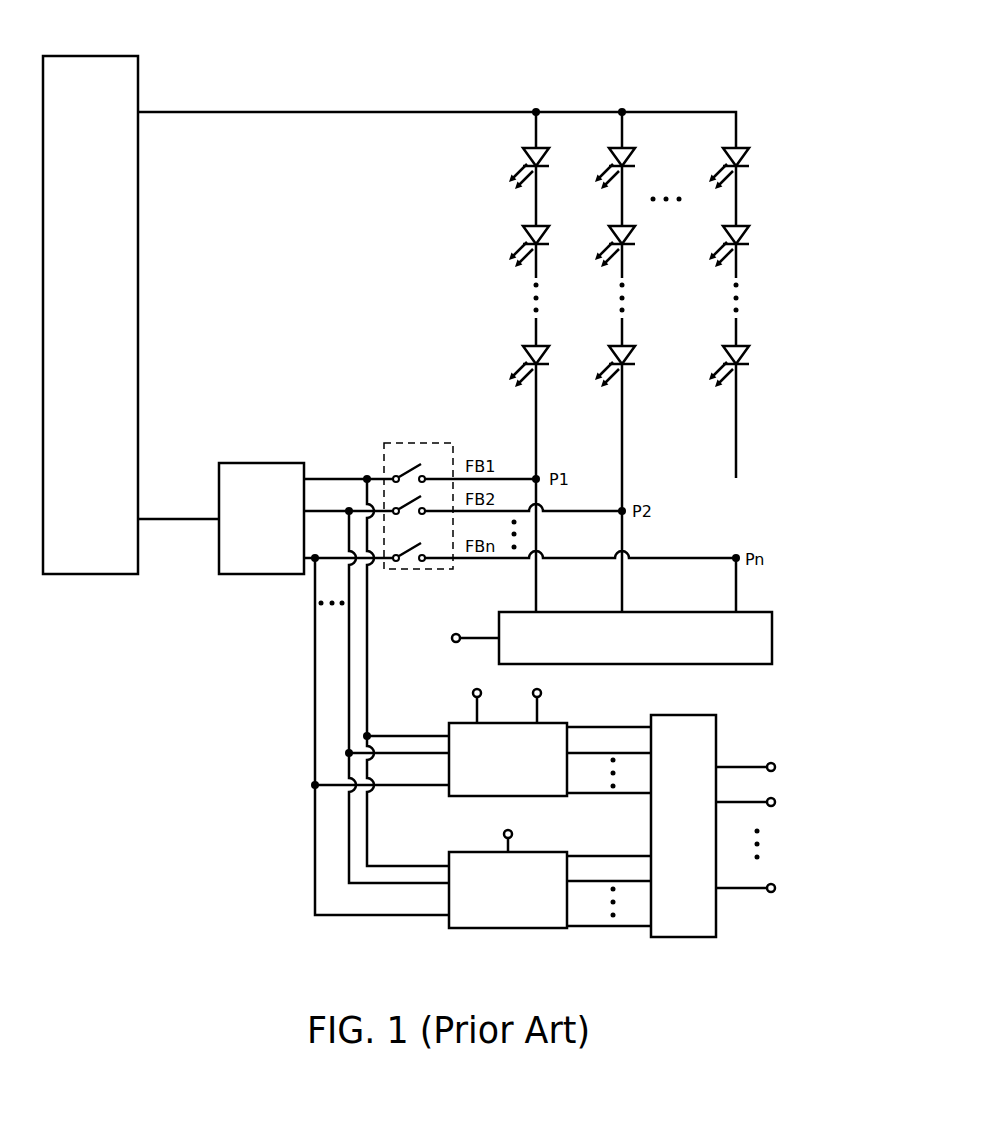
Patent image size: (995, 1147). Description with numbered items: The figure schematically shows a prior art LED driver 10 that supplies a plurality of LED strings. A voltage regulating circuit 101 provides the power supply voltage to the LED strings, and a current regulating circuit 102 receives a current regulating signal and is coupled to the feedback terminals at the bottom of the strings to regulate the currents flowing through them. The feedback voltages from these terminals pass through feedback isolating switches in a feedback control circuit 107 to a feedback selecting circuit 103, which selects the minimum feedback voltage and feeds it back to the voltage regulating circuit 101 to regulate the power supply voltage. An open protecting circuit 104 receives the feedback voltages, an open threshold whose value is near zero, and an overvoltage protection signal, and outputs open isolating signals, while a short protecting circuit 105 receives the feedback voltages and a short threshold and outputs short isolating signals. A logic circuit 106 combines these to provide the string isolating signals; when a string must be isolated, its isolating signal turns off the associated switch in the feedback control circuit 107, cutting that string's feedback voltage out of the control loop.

The LED driver 10 is at (806, 73).
The voltage regulating circuit 101 is at (90, 315).
The current regulating circuit 102 is at (595, 571).
The feedback selecting circuit 103 is at (221, 518).
The open protecting circuit 104 is at (543, 741).
The short protecting circuit 105 is at (550, 880).
The logic circuit 106 is at (753, 826).
The feedback control circuit 107 is at (413, 443).